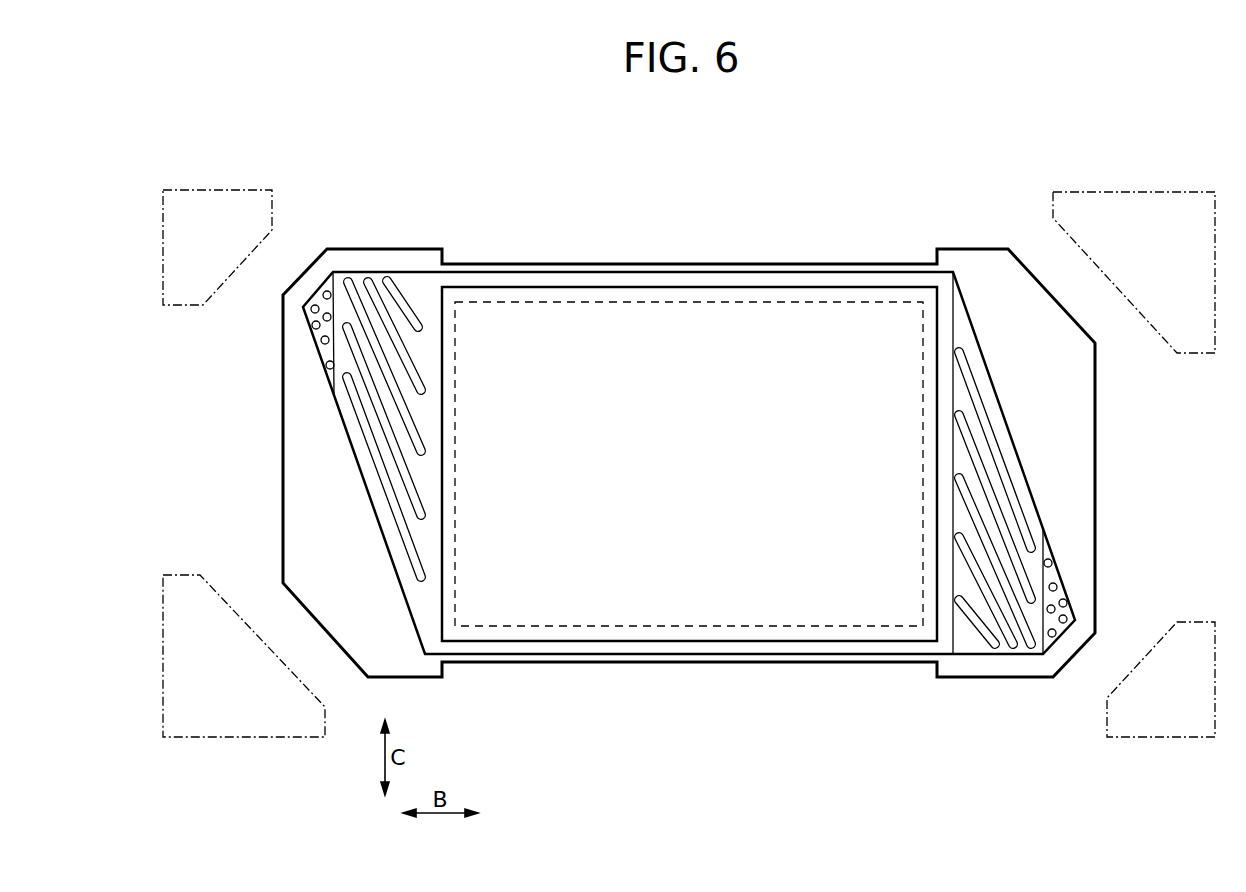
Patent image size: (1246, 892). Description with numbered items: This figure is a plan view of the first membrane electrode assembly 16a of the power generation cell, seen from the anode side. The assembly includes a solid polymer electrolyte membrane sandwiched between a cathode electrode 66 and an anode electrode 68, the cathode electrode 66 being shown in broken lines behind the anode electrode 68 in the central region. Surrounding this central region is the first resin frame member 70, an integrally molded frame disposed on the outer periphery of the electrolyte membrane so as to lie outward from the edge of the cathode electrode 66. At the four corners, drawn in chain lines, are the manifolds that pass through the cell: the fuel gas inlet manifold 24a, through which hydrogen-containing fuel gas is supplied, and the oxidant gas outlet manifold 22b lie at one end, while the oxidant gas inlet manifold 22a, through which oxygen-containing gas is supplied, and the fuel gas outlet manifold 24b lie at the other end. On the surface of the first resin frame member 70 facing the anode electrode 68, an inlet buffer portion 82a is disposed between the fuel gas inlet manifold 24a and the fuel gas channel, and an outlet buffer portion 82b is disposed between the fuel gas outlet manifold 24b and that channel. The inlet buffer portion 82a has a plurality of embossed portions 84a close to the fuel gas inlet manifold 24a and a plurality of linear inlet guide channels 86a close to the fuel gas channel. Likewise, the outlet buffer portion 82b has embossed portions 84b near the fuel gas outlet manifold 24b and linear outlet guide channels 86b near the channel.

The first membrane electrode assembly 16a is at (447, 148).
The first resin frame member 70 is at (952, 240).
The inlet buffer portion 82a is at (374, 256).
The outlet buffer portion 82b is at (1004, 668).
The anode electrode 68 is at (561, 322).
The cathode electrode 66 is at (615, 352).
The embossed portions 84a is at (320, 341).
The embossed portions 84b is at (1056, 587).
The linear inlet guide channels 86a is at (407, 445).
The linear outlet guide channels 86b is at (973, 483).
The fuel gas inlet manifold 24a is at (206, 214).
The oxidant gas inlet manifold 22a is at (1128, 211).
The oxidant gas outlet manifold 22b is at (222, 712).
The fuel gas outlet manifold 24b is at (1152, 715).